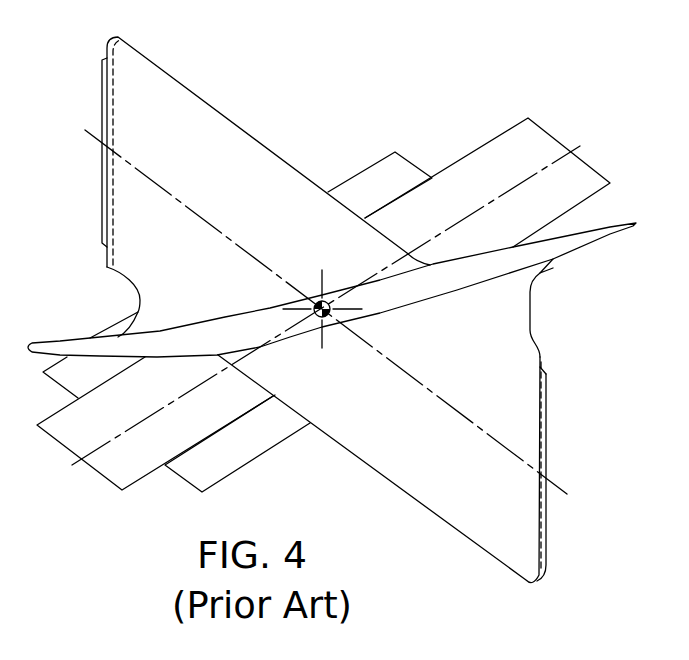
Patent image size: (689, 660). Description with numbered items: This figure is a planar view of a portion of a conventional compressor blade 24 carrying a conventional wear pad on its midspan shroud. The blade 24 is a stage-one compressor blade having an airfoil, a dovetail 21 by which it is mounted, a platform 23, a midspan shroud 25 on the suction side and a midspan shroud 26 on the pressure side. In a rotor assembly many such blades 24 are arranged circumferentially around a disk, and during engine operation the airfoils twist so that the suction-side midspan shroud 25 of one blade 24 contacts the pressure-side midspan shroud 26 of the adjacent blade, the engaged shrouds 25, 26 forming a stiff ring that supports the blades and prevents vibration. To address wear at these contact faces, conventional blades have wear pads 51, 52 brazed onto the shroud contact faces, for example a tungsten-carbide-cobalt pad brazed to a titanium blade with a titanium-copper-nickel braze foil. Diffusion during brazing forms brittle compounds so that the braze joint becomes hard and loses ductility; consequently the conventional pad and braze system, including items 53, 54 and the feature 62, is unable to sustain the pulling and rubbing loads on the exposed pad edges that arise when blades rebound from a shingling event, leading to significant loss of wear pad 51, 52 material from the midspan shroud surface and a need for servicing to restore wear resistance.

The dovetail 21 is at (413, 168).
The platform 23 is at (532, 148).
The compressor blade 24 is at (488, 270).
The midspan shroud on the suction side 25 is at (212, 137).
The midspan shroud on the pressure side 26 is at (469, 492).
The wear pad 51 is at (102, 99).
The wear pad 52 is at (546, 424).
The conventional pad/braze system component 53 is at (107, 245).
The conventional pad/braze system component 54 is at (543, 371).
The bracket bend 62 is at (542, 355).